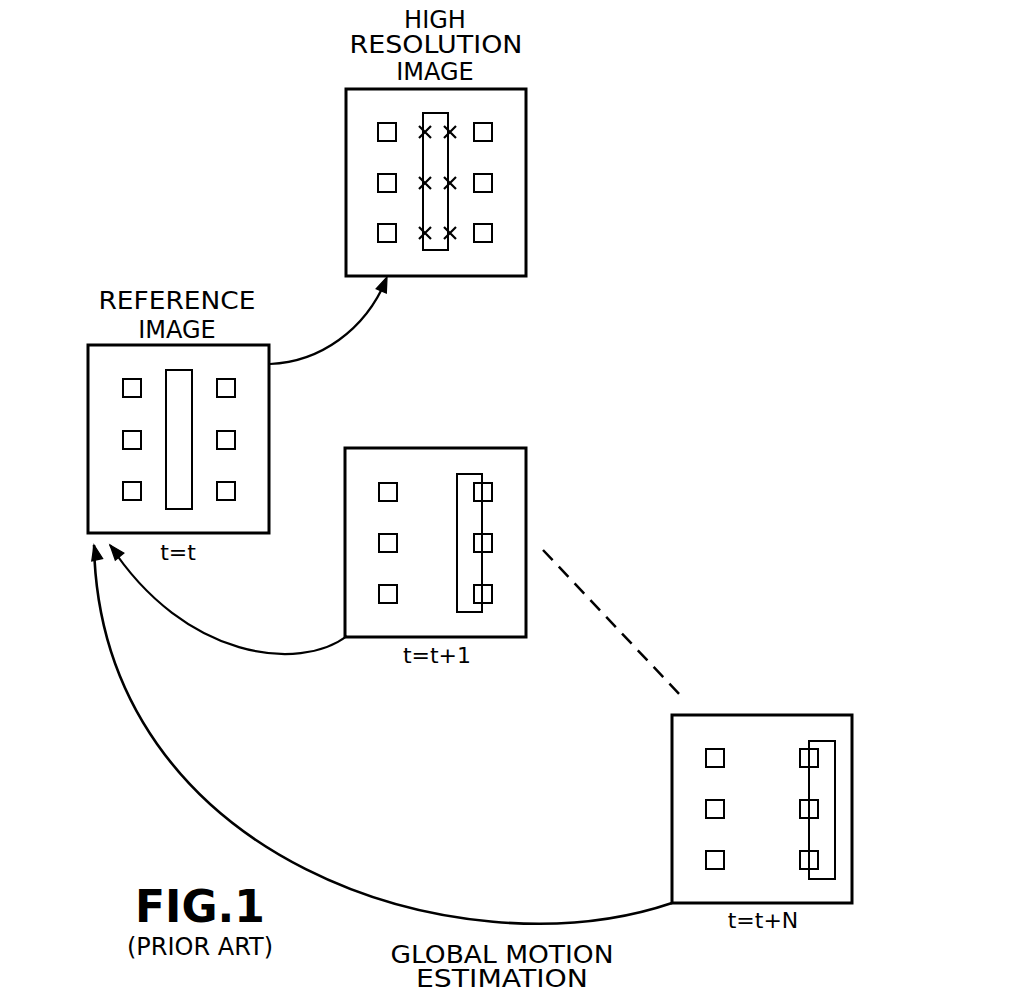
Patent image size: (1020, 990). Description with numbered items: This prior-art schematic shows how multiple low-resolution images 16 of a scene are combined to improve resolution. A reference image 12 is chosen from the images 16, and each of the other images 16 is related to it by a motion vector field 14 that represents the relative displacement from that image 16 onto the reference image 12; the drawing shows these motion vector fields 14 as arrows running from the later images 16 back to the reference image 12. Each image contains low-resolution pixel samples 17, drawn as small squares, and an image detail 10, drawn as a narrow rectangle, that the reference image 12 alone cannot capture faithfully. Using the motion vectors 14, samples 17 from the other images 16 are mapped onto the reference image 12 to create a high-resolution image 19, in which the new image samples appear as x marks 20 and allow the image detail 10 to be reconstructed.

The image detail 10 is at (423, 155).
The reference image 12 is at (88, 358).
The motion vector field 14 is at (260, 654).
The low-resolution image 16 is at (487, 448).
The image samples 17 is at (492, 233).
The high-resolution image 19 is at (527, 113).
The interpolated pixel positions (x marks) 20 is at (456, 236).